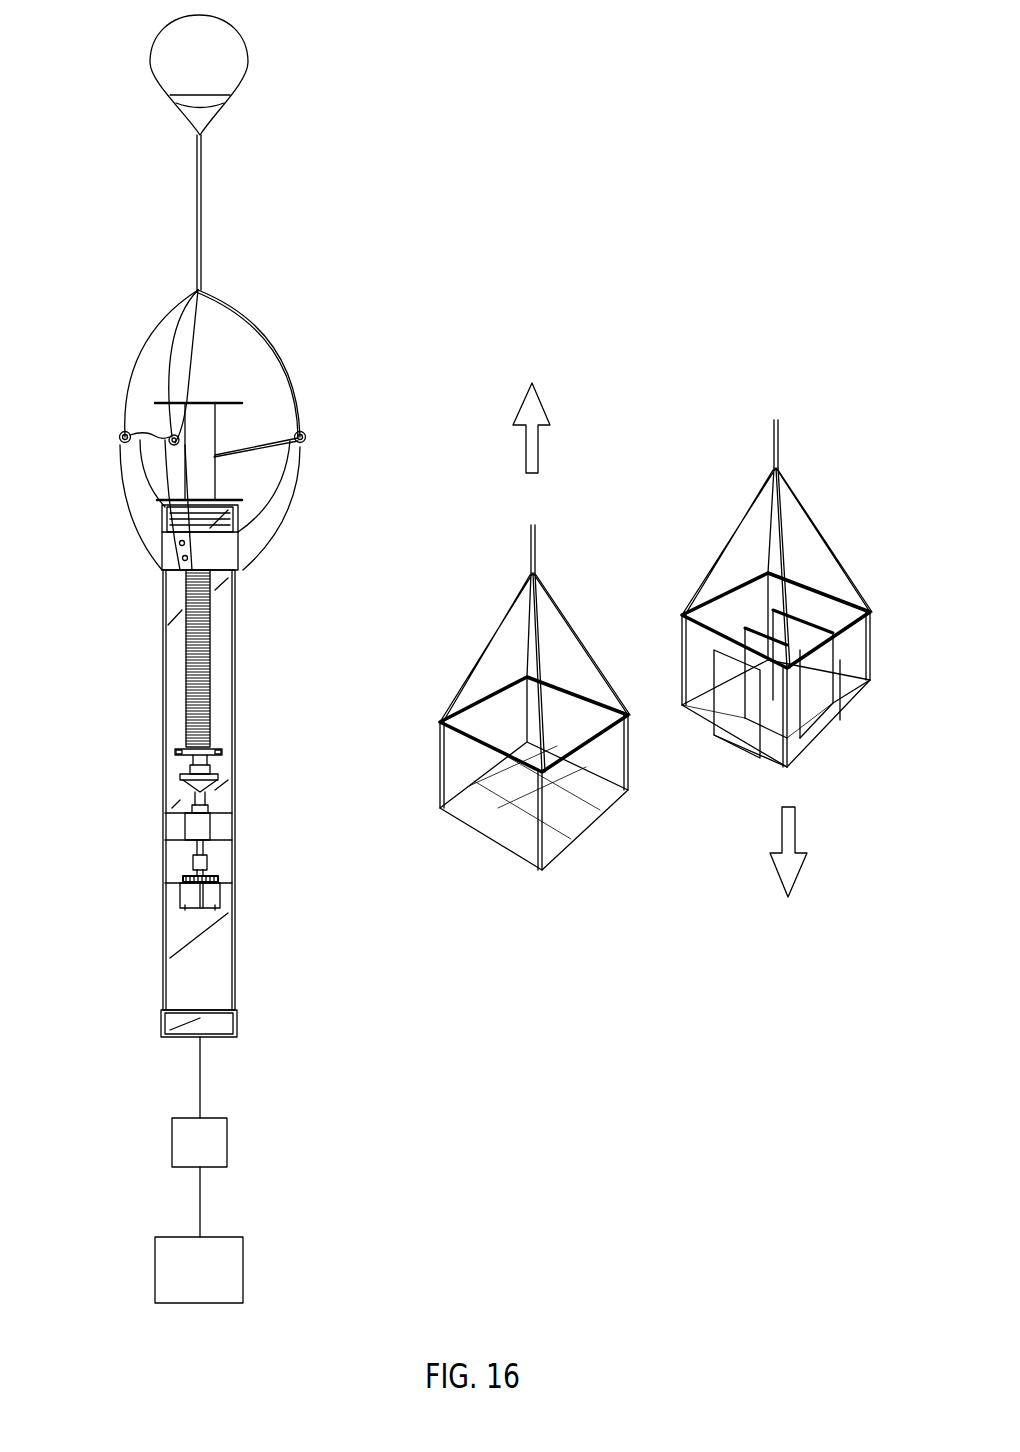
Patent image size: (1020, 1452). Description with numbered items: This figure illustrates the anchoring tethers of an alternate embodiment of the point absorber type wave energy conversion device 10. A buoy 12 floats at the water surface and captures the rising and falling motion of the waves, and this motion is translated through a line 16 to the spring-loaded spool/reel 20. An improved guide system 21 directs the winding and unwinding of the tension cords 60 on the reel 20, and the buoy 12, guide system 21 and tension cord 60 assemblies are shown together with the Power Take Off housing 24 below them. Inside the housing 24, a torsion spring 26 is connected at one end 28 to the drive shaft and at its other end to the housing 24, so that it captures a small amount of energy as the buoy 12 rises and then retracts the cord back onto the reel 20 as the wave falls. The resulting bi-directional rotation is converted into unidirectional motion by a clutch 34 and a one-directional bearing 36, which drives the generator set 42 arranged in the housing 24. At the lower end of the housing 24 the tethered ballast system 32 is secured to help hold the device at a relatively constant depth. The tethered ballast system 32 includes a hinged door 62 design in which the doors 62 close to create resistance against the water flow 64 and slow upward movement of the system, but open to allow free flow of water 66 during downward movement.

The wave energy conversion device 10 is at (367, 352).
The buoy 12 is at (152, 62).
The line 16 is at (202, 222).
The spool/reel 20 is at (197, 403).
The guide system 21 is at (287, 480).
The Power Take Off housing 24 is at (163, 953).
The torsion spring 26 is at (197, 655).
The end of torsion spring 28 is at (218, 752).
The tethered ballast system 32 is at (227, 1142).
The clutch 34 is at (180, 777).
The one-directional bearing 36 is at (206, 788).
The generator set 42 is at (218, 898).
The tension cord 60 is at (250, 322).
The hinged door 62 is at (500, 825).
The water flow 64 is at (538, 447).
The free flow of water 66 is at (782, 830).